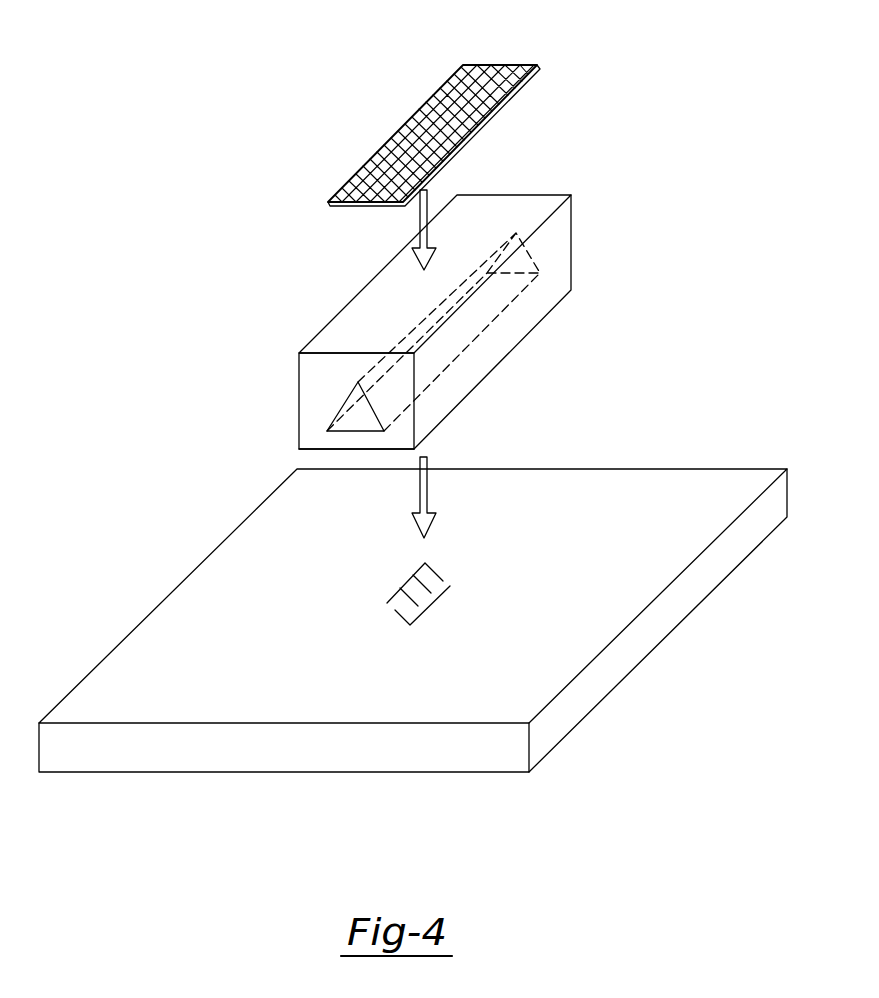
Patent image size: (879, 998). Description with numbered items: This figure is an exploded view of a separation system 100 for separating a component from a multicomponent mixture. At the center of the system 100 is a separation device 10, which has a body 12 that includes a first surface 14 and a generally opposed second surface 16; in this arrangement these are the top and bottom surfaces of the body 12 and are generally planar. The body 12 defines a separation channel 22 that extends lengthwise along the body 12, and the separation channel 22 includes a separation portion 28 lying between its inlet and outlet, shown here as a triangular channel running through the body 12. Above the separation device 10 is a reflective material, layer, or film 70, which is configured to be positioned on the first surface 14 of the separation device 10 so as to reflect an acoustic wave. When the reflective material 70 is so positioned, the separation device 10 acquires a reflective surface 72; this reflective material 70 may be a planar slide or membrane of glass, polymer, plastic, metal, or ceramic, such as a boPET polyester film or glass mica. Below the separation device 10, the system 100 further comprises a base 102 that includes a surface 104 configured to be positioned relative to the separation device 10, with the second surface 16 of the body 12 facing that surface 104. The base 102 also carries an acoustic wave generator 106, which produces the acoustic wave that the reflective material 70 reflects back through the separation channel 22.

The separation device 10 is at (422, 366).
The body 12 is at (315, 375).
The first surface 14 is at (318, 334).
The second surface 16 is at (318, 450).
The separation channel 22 is at (489, 332).
The separation portion 28 is at (465, 347).
The reflective material 70 is at (452, 111).
The reflective surface 72 is at (487, 123).
The system 100 is at (426, 456).
The base 102 is at (426, 583).
The surface 104 is at (709, 482).
The acoustic wave generator 106 is at (433, 612).